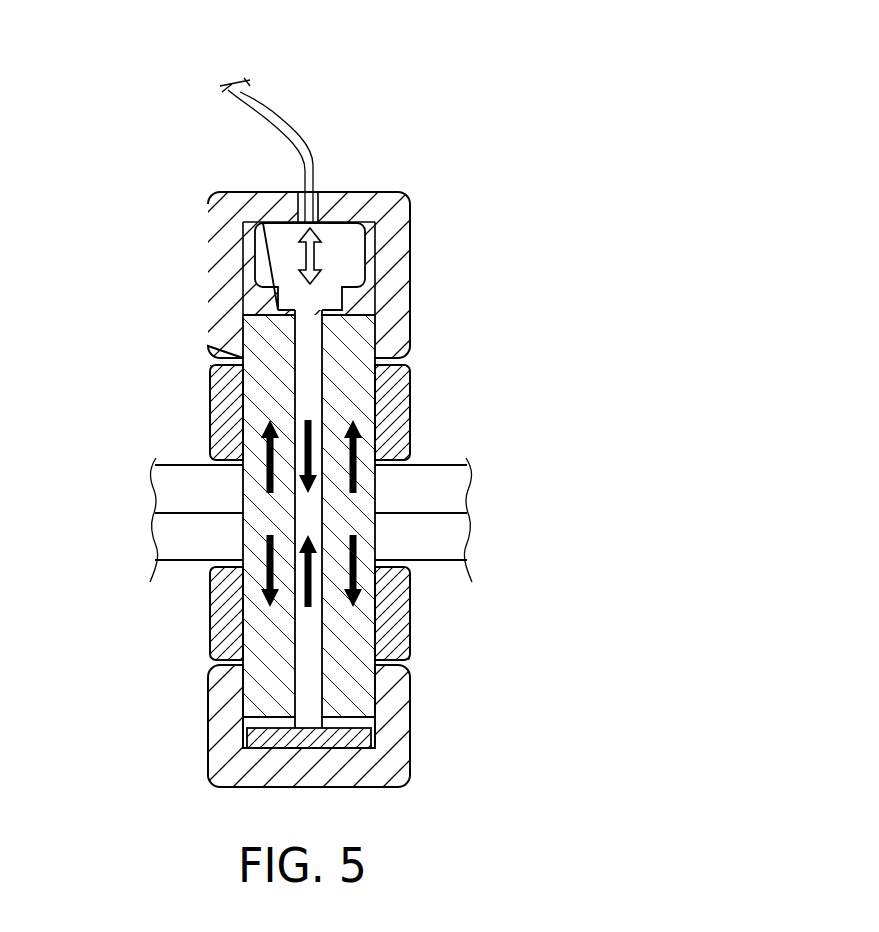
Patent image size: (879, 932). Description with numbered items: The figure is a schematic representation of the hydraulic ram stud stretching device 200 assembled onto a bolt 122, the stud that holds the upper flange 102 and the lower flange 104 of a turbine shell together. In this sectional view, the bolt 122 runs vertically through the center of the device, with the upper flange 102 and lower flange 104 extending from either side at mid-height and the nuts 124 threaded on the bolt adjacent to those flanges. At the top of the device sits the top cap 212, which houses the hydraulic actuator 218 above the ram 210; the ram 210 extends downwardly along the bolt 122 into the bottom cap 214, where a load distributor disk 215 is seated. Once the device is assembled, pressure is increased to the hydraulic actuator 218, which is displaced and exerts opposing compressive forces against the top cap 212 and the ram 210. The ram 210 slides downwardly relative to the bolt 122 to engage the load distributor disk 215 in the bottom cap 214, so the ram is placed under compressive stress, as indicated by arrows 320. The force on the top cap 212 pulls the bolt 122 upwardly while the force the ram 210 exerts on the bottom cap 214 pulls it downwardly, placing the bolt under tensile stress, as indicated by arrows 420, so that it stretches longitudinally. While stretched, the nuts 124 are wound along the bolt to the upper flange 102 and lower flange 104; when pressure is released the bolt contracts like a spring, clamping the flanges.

The hydraulic ram stud stretching device 200 is at (415, 93).
The top cap 212 is at (410, 222).
The hydraulic actuator 218 is at (355, 242).
The bolt 122 is at (343, 403).
The ram 210 is at (300, 320).
The nuts 124 is at (228, 417).
The arrows indicating compressive stress 320 is at (212, 370).
The upper flange 102 is at (445, 493).
The lower flange 104 is at (445, 533).
The arrows indicating tensile stress 420 is at (330, 551).
The bottom cap 214 is at (402, 708).
The load distributor disk 215 is at (262, 740).